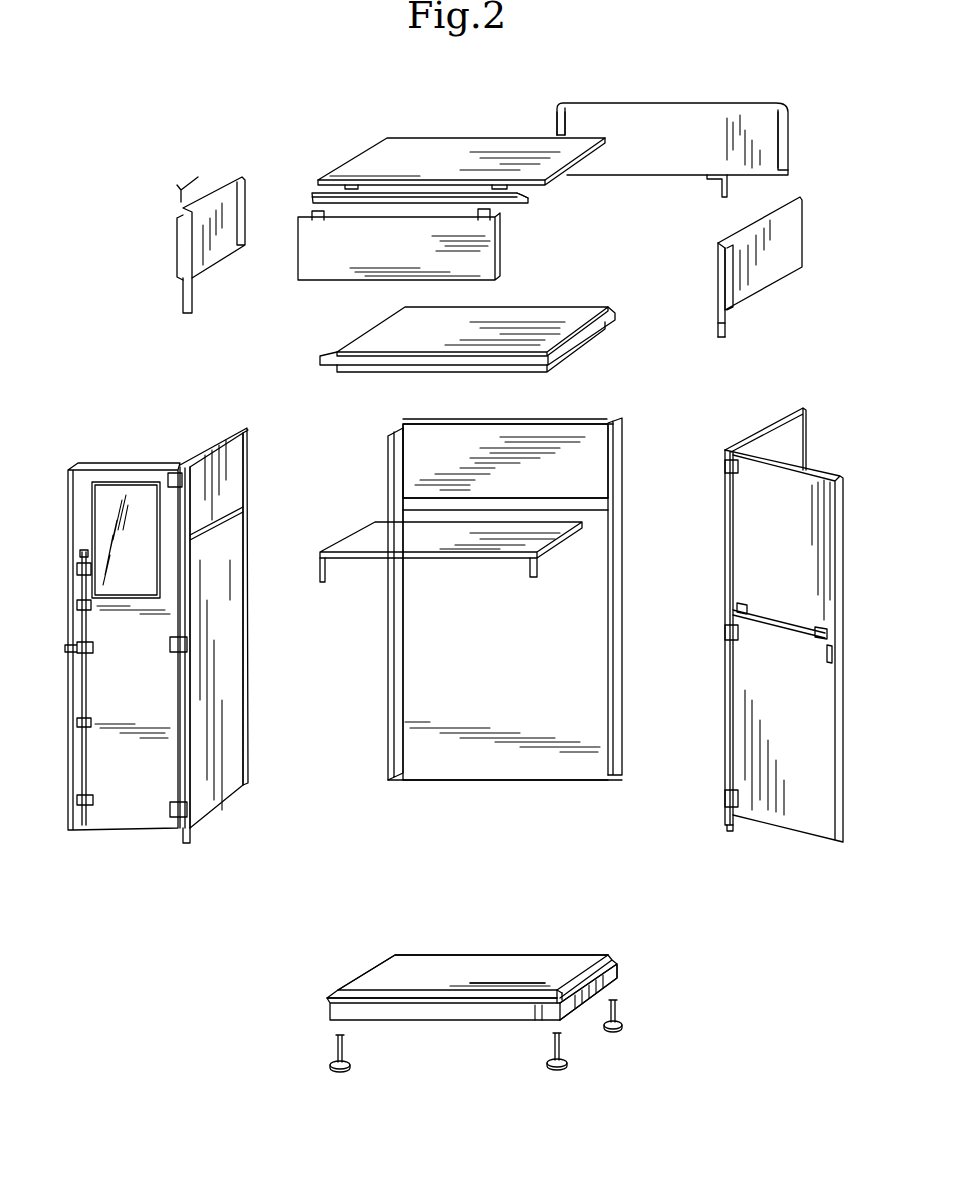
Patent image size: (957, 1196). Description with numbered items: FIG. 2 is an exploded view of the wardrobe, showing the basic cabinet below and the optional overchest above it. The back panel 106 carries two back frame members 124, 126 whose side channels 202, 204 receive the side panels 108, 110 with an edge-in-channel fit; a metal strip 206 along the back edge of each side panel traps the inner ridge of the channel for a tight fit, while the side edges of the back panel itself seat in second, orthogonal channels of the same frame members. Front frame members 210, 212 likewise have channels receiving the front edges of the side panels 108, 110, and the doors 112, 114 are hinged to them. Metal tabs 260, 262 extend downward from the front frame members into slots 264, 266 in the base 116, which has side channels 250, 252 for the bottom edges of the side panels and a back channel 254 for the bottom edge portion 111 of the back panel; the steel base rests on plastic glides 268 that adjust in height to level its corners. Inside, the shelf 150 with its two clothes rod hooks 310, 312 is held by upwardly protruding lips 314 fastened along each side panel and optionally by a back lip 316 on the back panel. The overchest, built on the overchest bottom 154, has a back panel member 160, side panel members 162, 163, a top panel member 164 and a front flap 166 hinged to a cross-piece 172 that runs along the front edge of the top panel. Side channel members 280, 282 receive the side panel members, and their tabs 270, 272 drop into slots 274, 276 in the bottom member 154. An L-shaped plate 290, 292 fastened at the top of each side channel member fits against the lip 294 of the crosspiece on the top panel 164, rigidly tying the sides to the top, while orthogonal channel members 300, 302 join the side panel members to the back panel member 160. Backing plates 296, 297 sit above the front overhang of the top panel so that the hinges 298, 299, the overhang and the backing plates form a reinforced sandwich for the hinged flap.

The back panel 106 is at (515, 661).
The side panel 108 is at (231, 591).
The side panel 110 is at (802, 459).
The bottom edge portion 111 is at (452, 772).
The door 112 is at (142, 691).
The door 114 is at (797, 716).
The base 116 is at (500, 930).
The back frame member 124 is at (396, 428).
The back frame member 126 is at (619, 425).
The shelf 150 is at (446, 549).
The overchest bottom 154 is at (490, 336).
The back panel member 160 is at (688, 142).
The side panel member 162 is at (207, 258).
The side panel member 163 is at (767, 275).
The top panel member 164 is at (455, 166).
The front flap 166 is at (406, 261).
The cross-piece 172 is at (312, 197).
The side channel 202 is at (394, 463).
The side channel 204 is at (613, 460).
The metal strip 206 is at (243, 462).
The front frame member 210 is at (188, 463).
The front frame member 212 is at (725, 497).
The channel 250 is at (362, 977).
The channel 252 is at (595, 967).
The channel 254 is at (592, 970).
The metal tab 260 is at (190, 836).
The metal tab 262 is at (727, 822).
The slot 264 is at (368, 985).
The slot 266 is at (547, 987).
The glides 268 is at (352, 1062).
The metal tab 270 is at (185, 303).
The metal tab 272 is at (726, 328).
The slot 274 is at (336, 357).
The slot 276 is at (518, 358).
The side channel member 280 is at (177, 244).
The side channel member 282 is at (720, 270).
The L-shaped plate 290 is at (182, 189).
The L-shaped plate 292 is at (725, 197).
The lip 294 is at (530, 202).
The backing plate 296 is at (350, 183).
The backing plate 297 is at (500, 183).
The hinge 298 is at (320, 222).
The hinge 299 is at (490, 221).
The orthogonal channel member 300 is at (570, 104).
The right flange 302 is at (786, 128).
The clothes rod hook 310 is at (318, 575).
The clothes rod hook 312 is at (530, 575).
The lip 314 is at (241, 508).
The back lip 316 is at (541, 470).